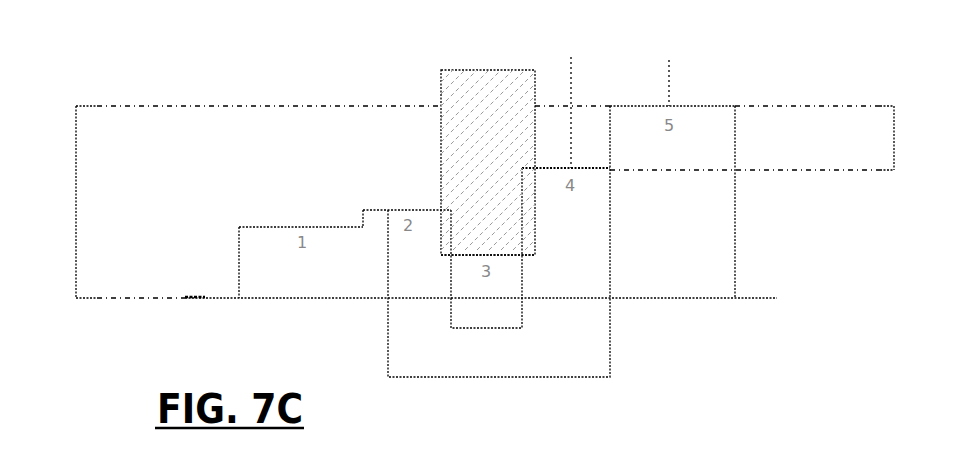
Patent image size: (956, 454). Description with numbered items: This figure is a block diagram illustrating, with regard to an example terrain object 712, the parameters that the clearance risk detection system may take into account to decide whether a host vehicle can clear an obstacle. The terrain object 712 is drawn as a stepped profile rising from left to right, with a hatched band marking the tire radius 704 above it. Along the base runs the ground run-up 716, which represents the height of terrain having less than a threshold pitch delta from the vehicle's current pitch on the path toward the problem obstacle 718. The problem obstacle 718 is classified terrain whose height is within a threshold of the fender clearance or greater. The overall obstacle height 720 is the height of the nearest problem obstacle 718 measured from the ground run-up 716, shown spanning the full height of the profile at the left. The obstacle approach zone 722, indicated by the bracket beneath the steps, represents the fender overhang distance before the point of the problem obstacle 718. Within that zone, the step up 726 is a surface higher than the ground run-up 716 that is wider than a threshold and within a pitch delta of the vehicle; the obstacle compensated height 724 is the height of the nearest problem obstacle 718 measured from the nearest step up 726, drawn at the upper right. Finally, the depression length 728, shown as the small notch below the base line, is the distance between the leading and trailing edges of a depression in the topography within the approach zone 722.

The tire radius 704 is at (530, 64).
The terrain object 712 is at (735, 265).
The ground run-up 716 is at (426, 310).
The problem obstacle 718 is at (673, 67).
The overall obstacle height 720 is at (320, 202).
The obstacle approach zone 722 is at (499, 307).
The obstacle compensated height 724 is at (773, 138).
The step up 726 is at (571, 95).
The depression length 728 is at (486, 329).